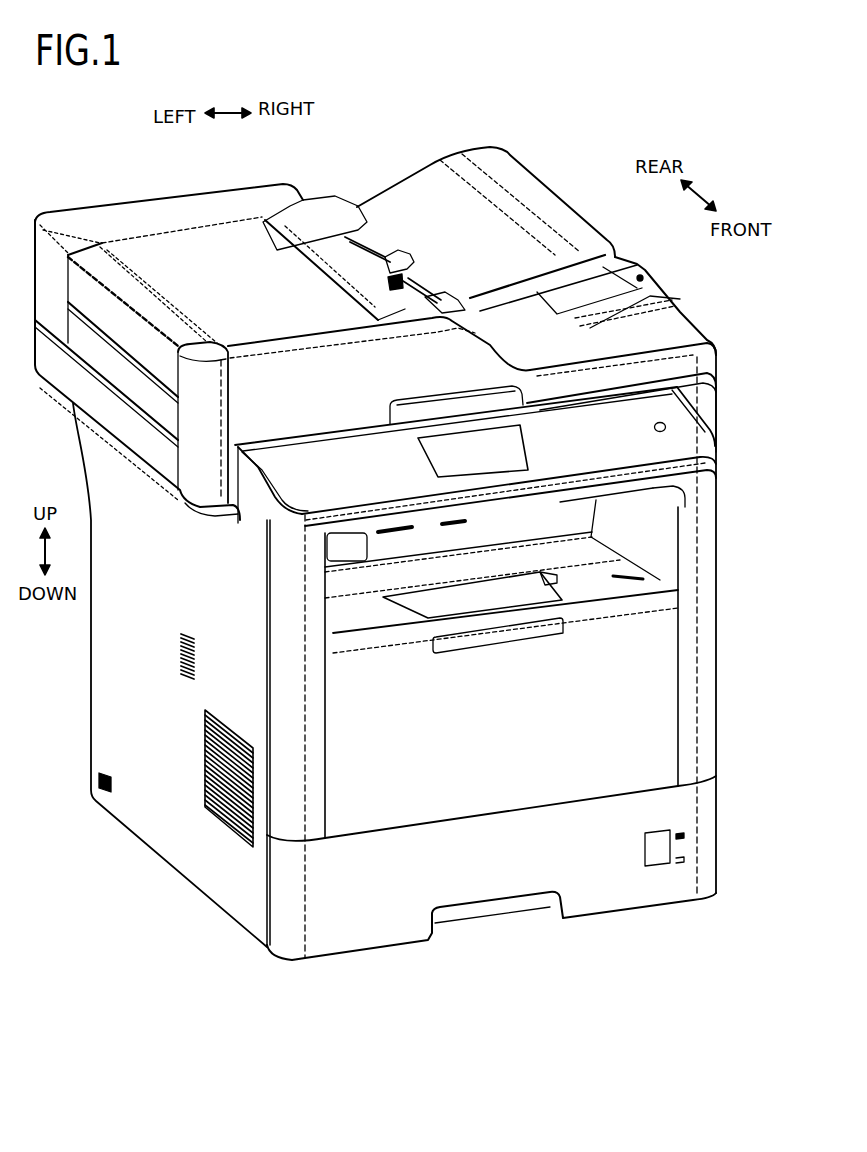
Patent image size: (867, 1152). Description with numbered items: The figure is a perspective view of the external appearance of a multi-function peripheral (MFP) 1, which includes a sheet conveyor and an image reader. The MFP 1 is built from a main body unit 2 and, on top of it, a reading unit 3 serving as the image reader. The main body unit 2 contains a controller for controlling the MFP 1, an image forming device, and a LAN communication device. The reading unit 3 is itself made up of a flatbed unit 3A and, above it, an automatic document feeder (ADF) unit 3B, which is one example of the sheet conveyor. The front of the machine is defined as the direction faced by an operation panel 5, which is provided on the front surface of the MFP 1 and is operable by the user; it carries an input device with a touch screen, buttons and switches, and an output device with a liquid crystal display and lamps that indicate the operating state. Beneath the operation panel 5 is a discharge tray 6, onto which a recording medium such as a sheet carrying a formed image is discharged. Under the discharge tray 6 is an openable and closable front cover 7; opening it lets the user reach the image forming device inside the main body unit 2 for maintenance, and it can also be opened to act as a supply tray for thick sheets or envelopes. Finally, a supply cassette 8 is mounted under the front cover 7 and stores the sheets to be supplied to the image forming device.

The multi-function peripheral 1 is at (517, 108).
The main body unit 2 is at (103, 652).
The reading unit 3 is at (172, 210).
The flatbed unit 3A is at (701, 413).
The automatic document feeder unit 3B is at (705, 366).
The operation panel 5 is at (660, 443).
The discharge tray 6 is at (578, 552).
The front cover 7 is at (625, 665).
The supply cassette 8 is at (600, 890).